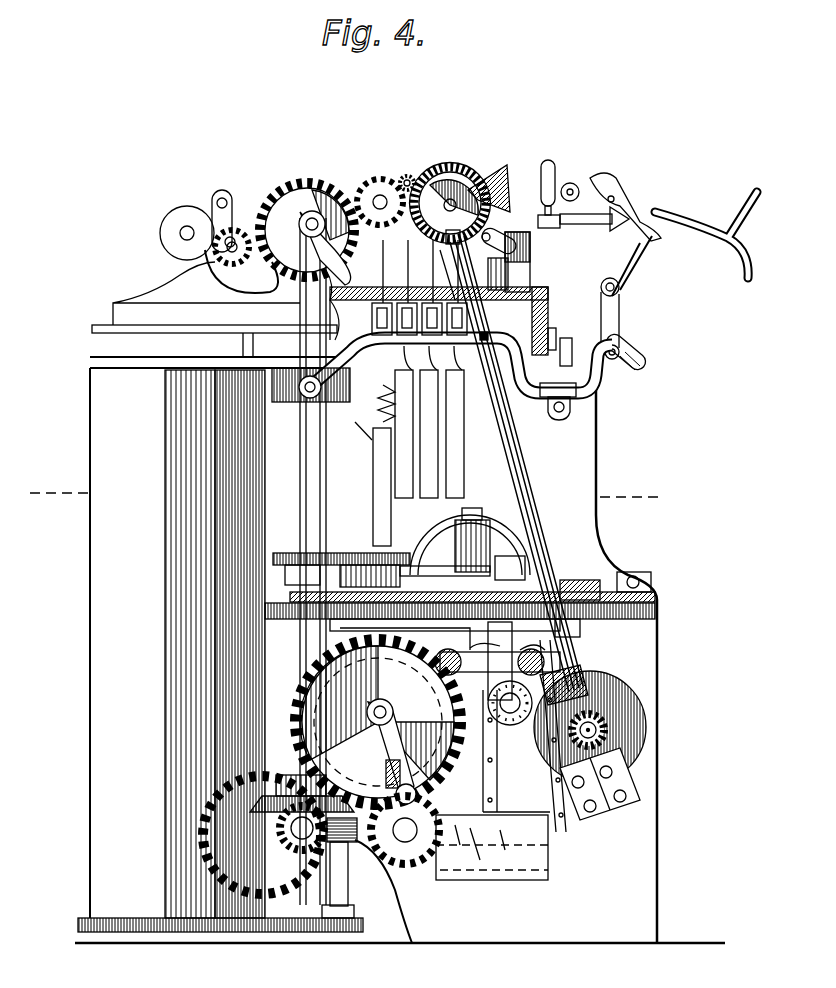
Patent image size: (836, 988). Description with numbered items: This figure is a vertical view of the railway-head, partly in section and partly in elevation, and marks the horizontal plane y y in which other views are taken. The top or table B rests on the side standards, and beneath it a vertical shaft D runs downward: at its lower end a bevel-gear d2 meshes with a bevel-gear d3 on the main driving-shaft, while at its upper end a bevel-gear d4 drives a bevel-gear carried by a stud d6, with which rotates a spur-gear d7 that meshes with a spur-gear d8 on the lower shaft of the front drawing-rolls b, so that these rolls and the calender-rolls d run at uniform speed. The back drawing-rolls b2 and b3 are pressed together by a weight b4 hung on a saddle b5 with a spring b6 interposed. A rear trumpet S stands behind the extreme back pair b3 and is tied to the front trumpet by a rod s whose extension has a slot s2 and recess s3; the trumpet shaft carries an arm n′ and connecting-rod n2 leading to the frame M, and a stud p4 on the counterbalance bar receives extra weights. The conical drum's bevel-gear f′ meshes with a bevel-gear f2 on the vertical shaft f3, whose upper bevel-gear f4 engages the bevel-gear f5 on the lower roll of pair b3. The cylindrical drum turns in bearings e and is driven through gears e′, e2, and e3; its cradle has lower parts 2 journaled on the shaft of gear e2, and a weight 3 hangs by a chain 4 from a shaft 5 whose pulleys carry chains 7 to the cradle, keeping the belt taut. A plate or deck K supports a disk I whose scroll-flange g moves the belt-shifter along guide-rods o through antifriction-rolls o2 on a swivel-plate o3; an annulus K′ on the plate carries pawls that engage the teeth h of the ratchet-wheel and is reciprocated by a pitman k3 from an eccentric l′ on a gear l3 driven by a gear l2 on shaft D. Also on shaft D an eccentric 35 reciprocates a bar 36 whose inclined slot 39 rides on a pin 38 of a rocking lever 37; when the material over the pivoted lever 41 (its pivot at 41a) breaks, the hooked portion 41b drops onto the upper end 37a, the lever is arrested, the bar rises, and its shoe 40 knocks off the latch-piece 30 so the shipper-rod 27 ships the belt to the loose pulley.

The calender-rolls d is at (200, 214).
The bevel-gear d2 is at (212, 247).
The teeth h is at (235, 215).
The stud d6 is at (322, 188).
The spur-gear d7 is at (298, 192).
The spur-gear d8 is at (378, 180).
The front drawing-rolls b is at (407, 176).
The back drawing-rolls b2 is at (440, 170).
The extreme back drawing-rolls b3 is at (455, 176).
The bevel-gear f4 is at (454, 221).
The bevel-gear f5 is at (500, 178).
The connecting-rod s is at (432, 263).
The recess s3 is at (498, 240).
The slot s2 is at (498, 273).
The stud p4 is at (517, 232).
The rear trumpet S is at (505, 185).
The pivoted lever 41 is at (612, 176).
The pivot 41a is at (618, 200).
The hooked portion 41b is at (650, 238).
The upper end of rocking lever 37a is at (640, 250).
The rocking lever 37 is at (618, 312).
The pin 38 is at (622, 352).
The inclined slot 39 is at (642, 374).
The top or table B is at (439, 321).
The bevel-gear d4 is at (337, 305).
The shipper-rod 27 is at (556, 336).
The latch-piece 30 is at (572, 350).
The saddle or link b5 is at (380, 333).
The adjustable block or shoe 40 is at (545, 385).
The rod or bar 36 is at (527, 402).
The eccentric 35 is at (283, 398).
The spring b6 is at (378, 400).
The weight b4 is at (419, 424).
The arm n′ is at (345, 466).
The frame M is at (470, 522).
The connecting-rod n2 is at (455, 538).
The pitman k3 is at (510, 560).
The gear l2 is at (282, 552).
The eccentric l′ is at (352, 552).
The gear l3 is at (392, 552).
The ring or annulus K′ is at (572, 578).
The plate or deck K is at (616, 582).
The disk I is at (612, 620).
The scroll-flange g is at (578, 632).
The vertical shaft f3 is at (530, 504).
The guide-rods o is at (497, 661).
The antifriction-rolls o2 is at (409, 633).
The swivel-plate o3 is at (495, 700).
The bearings e is at (378, 722).
The gear e3 is at (372, 680).
The shaft 5 is at (480, 730).
The chain 4 is at (497, 770).
The chains 7 is at (546, 776).
The weight 3 is at (492, 847).
The lower cradle parts 2 is at (428, 870).
The bevel-gear f2 is at (600, 700).
The bevel-gear f′ is at (606, 730).
The gear-wheel e2 is at (403, 855).
The bevel-gear d3 is at (306, 840).
The gear e′ is at (305, 885).
The vertical shaft D is at (300, 487).
The plane y y is at (345, 496).